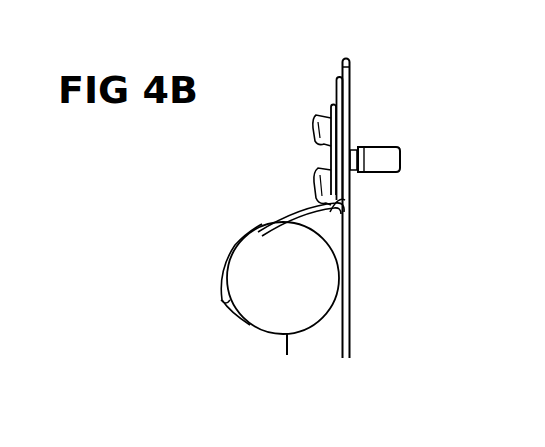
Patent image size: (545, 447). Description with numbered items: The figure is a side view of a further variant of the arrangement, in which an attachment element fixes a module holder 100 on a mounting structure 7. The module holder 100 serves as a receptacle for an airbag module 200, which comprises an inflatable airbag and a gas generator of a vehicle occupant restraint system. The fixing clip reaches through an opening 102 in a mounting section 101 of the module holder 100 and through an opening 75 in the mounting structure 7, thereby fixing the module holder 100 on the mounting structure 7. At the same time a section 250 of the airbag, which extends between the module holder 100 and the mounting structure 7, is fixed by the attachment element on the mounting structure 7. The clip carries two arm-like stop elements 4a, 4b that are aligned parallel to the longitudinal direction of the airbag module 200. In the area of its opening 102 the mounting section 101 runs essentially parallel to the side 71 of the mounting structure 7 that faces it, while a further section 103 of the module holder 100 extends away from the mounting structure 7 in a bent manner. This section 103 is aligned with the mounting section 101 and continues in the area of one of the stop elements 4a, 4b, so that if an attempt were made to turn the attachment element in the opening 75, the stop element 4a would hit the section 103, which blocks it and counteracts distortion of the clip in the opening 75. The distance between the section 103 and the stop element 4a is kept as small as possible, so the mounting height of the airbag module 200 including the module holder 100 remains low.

The mounting structure 7 is at (350, 64).
The side of the mounting structure 71 is at (343, 62).
The stop element 4a is at (313, 183).
The stop element 4b is at (318, 127).
The mounting section 101 is at (334, 140).
The opening 102 is at (337, 152).
The section of the module holder 103 is at (290, 212).
The module holder 100 is at (247, 230).
The opening 75 is at (365, 178).
The section of the airbag 250 is at (340, 192).
The airbag module 200 is at (322, 287).